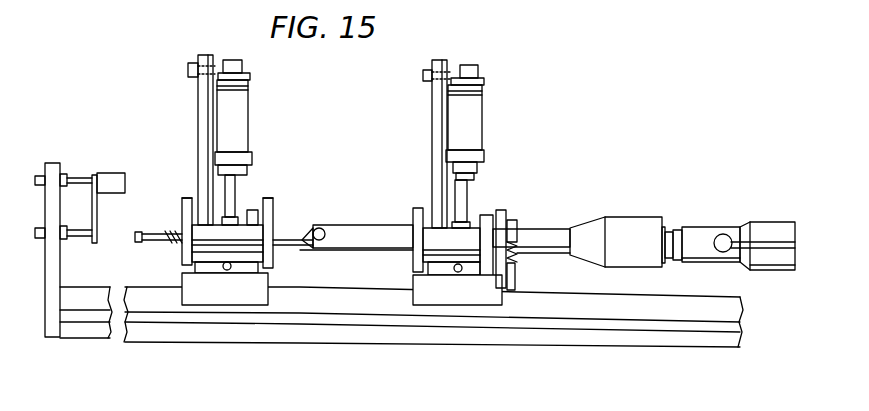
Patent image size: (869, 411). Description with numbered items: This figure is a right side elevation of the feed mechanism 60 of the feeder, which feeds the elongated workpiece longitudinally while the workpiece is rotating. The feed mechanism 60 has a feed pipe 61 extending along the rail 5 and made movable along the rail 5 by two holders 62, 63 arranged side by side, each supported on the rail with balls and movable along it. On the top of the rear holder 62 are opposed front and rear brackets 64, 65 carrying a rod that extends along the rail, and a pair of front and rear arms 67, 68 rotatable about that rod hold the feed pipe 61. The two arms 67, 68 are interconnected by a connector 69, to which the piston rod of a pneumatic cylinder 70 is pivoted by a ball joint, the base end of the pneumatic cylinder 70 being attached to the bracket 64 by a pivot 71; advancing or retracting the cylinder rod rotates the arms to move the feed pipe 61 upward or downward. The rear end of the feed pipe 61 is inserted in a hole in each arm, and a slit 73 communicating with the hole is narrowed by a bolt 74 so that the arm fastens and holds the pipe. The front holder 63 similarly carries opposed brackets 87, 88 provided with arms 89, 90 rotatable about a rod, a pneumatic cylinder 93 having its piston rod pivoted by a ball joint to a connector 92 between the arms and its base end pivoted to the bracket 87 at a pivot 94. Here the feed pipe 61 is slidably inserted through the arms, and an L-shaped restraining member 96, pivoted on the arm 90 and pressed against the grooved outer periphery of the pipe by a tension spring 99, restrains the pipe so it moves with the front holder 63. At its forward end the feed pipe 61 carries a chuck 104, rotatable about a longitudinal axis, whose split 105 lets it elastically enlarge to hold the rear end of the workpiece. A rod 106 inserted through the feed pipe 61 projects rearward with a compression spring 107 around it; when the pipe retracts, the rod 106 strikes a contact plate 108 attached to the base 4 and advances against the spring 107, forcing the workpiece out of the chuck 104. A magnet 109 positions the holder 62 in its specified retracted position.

The base 4 is at (365, 330).
The rail 5 is at (732, 313).
The feed mechanism 60 is at (624, 210).
The feed pipe 61 is at (355, 235).
The holder 62 is at (244, 297).
The front holder 63 is at (478, 298).
The bracket 64 is at (203, 165).
The bracket 65 is at (253, 213).
The arm 67 is at (185, 213).
The arm 68 is at (273, 220).
The connector 69 is at (215, 253).
The pneumatic cylinder 70 is at (237, 132).
The pivot 71 is at (187, 72).
The slit 73 is at (185, 245).
The bolt 74 is at (185, 200).
The bracket 87 is at (432, 130).
The bracket 88 is at (485, 217).
The arm 89 is at (417, 207).
The arm 90 is at (500, 210).
The connector 92 is at (437, 257).
The pneumatic cylinder 93 is at (472, 140).
The pivot 94 is at (423, 78).
The L-shaped restraining member 96 is at (513, 220).
The tension spring 99 is at (510, 246).
The chuck 104 is at (773, 227).
The split 105 is at (782, 245).
The rod 106 is at (323, 245).
The compression spring 107 is at (163, 230).
The contact plate 108 is at (93, 243).
The magnet 109 is at (110, 183).